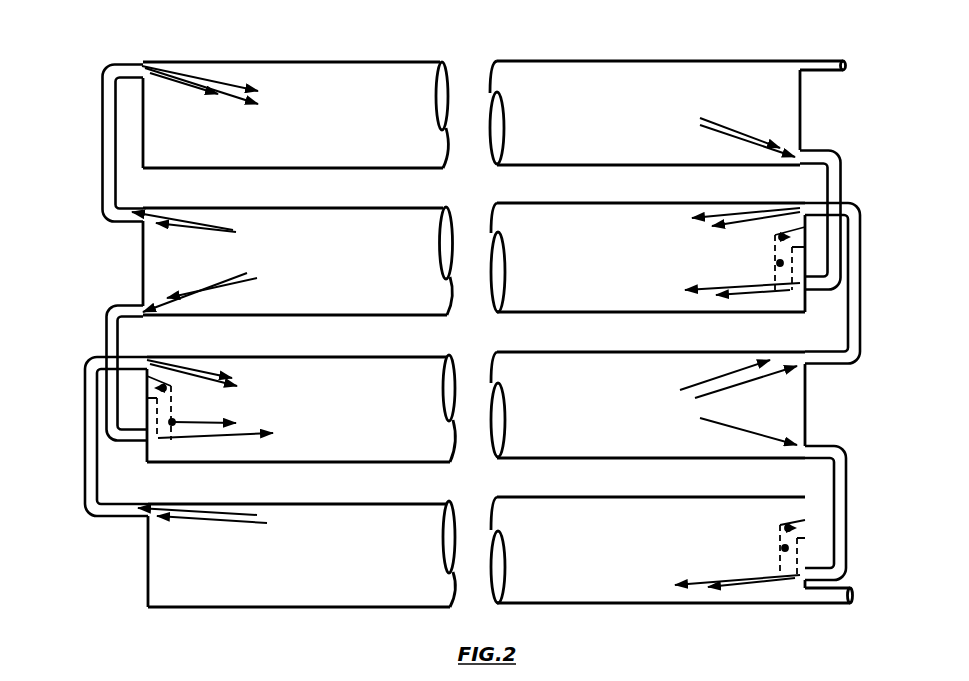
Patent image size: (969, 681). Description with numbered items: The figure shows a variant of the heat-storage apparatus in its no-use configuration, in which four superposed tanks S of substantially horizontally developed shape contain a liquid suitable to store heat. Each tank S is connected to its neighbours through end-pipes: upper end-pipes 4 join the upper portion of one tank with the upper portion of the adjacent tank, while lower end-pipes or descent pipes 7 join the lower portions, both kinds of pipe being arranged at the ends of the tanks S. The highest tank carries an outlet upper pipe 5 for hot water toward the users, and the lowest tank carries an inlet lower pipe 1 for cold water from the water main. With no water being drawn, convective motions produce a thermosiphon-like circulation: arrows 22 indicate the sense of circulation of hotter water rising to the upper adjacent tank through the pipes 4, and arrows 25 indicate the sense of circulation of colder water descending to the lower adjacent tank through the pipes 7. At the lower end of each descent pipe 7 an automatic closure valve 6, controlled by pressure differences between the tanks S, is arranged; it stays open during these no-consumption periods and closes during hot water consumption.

The inlet lower pipe 1 is at (833, 597).
The upper end-pipe 4 is at (106, 130).
The outlet upper pipe 5 is at (820, 63).
The automatic closure valve 6 is at (172, 421).
The lower end-pipe 7 is at (112, 330).
The sense of circulation of hotter water 22 is at (466, 298).
The sense of circulation of colder water 25 is at (471, 350).
The tank S is at (493, 238).